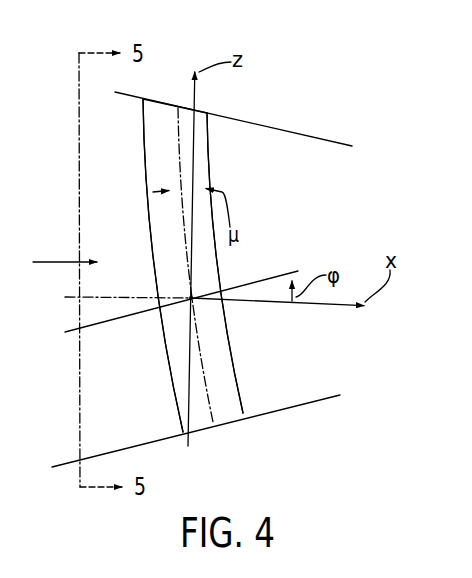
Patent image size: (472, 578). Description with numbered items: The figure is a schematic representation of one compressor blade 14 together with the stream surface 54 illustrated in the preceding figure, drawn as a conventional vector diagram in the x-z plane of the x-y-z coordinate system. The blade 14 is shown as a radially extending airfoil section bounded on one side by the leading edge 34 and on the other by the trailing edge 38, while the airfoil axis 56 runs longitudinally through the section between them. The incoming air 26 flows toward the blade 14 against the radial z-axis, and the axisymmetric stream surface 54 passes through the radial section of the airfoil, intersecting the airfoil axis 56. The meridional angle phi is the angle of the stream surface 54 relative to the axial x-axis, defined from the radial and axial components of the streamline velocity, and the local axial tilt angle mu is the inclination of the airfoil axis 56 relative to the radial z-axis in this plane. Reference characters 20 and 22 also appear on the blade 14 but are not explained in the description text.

The blade 14 is at (133, 153).
The airfoil blade 20 is at (233, 419).
The leading edge 22 is at (148, 98).
The air 26 is at (63, 261).
The leading edge 34 is at (148, 207).
The trailing edge 38 is at (210, 163).
The stream surface 54 is at (93, 327).
The airfoil axis 56 is at (177, 145).